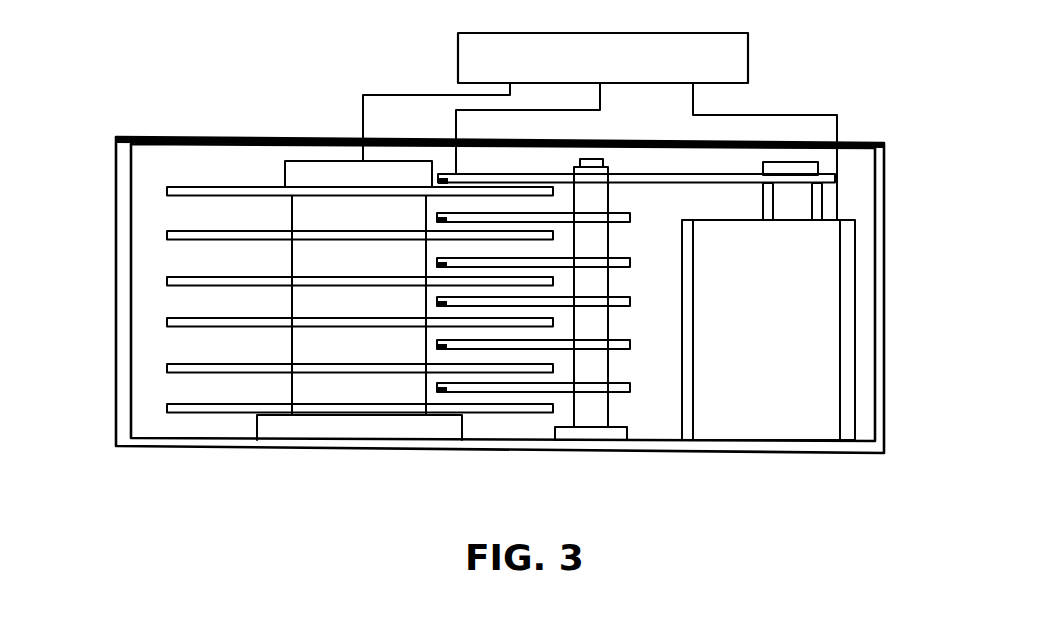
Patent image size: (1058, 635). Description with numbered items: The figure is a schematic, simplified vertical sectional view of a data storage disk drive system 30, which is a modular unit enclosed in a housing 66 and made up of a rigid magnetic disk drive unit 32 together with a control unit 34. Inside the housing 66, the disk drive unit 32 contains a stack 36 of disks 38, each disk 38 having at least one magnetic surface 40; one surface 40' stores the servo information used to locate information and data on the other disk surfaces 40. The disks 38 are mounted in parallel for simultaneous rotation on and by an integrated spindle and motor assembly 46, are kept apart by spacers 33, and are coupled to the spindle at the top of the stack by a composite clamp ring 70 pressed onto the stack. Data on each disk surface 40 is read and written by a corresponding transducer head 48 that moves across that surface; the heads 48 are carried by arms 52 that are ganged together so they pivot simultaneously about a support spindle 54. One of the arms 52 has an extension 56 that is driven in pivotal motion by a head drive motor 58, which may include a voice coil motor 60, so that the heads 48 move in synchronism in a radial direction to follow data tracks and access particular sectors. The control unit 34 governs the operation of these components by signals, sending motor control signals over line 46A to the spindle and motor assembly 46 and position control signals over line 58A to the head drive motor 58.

The data storage disk drive system 30 is at (893, 73).
The rigid magnetic disk drive unit 32 is at (328, 119).
The spacers 33 is at (290, 218).
The control unit 34 is at (745, 50).
The stack of disks 36 is at (248, 160).
The disks 38 is at (165, 319).
The magnetic surface 40 is at (310, 215).
The servo disk surface 40' is at (319, 139).
The integrated spindle and motor assembly 46 is at (357, 383).
The motor control signal line 46A is at (428, 107).
The transducer heads 48 is at (444, 174).
The arms 52 is at (628, 222).
The support spindle 54 is at (612, 405).
The extension 56 is at (650, 173).
The head drive motor 58 is at (818, 297).
The position control signal line 58A is at (747, 110).
The voice coil motor 60 is at (823, 200).
The housing 66 is at (884, 378).
The composite clamp ring 70 is at (303, 160).